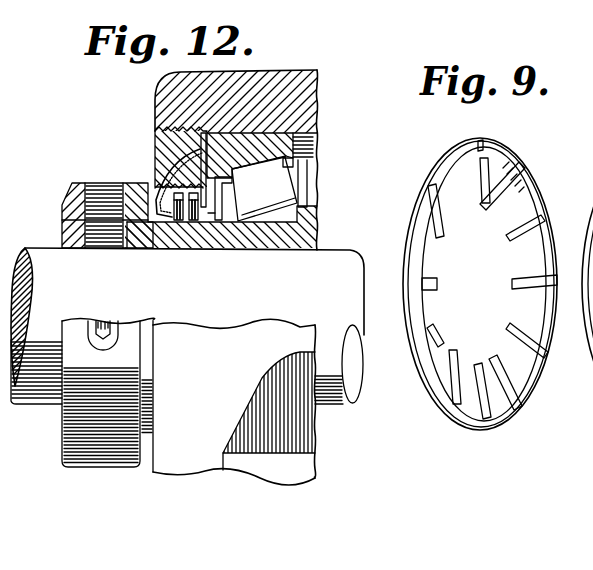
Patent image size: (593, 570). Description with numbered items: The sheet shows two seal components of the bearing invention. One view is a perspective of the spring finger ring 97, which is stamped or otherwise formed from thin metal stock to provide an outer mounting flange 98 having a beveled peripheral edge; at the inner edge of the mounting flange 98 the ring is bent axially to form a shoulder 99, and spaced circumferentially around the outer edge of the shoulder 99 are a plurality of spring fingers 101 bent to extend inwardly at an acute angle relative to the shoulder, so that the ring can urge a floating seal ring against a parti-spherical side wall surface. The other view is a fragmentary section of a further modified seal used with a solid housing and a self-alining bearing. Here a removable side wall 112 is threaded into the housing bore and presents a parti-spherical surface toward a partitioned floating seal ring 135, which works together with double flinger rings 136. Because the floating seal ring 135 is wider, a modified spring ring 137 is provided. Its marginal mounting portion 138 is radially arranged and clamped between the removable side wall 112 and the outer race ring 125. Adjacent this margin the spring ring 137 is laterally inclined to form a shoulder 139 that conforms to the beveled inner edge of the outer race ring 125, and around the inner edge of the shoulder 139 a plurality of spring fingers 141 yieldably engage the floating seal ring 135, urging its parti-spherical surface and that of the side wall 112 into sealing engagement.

In FIG. 12, the shoulder 139 is at (212, 177).
In FIG. 12, the removable side wall 112 is at (165, 155).
In FIG. 12, the marginal mounting portion 138 is at (201, 150).
In FIG. 12, the outer race ring 125 is at (306, 146).
In FIG. 12, the spring ring 137 is at (216, 184).
In FIG. 12, the partitioned floating seal ring 135 is at (153, 190).
In FIG. 12, the double flinger ring 136 is at (186, 220).
In FIG. 12, the spring fingers 141 is at (208, 212).
In FIG. 9, the spring finger ring 97 is at (540, 188).
In FIG. 9, the outer mounting flange 98 is at (484, 145).
In FIG. 9, the shoulder 99 is at (525, 182).
In FIG. 9, the spring fingers 101 is at (505, 226).